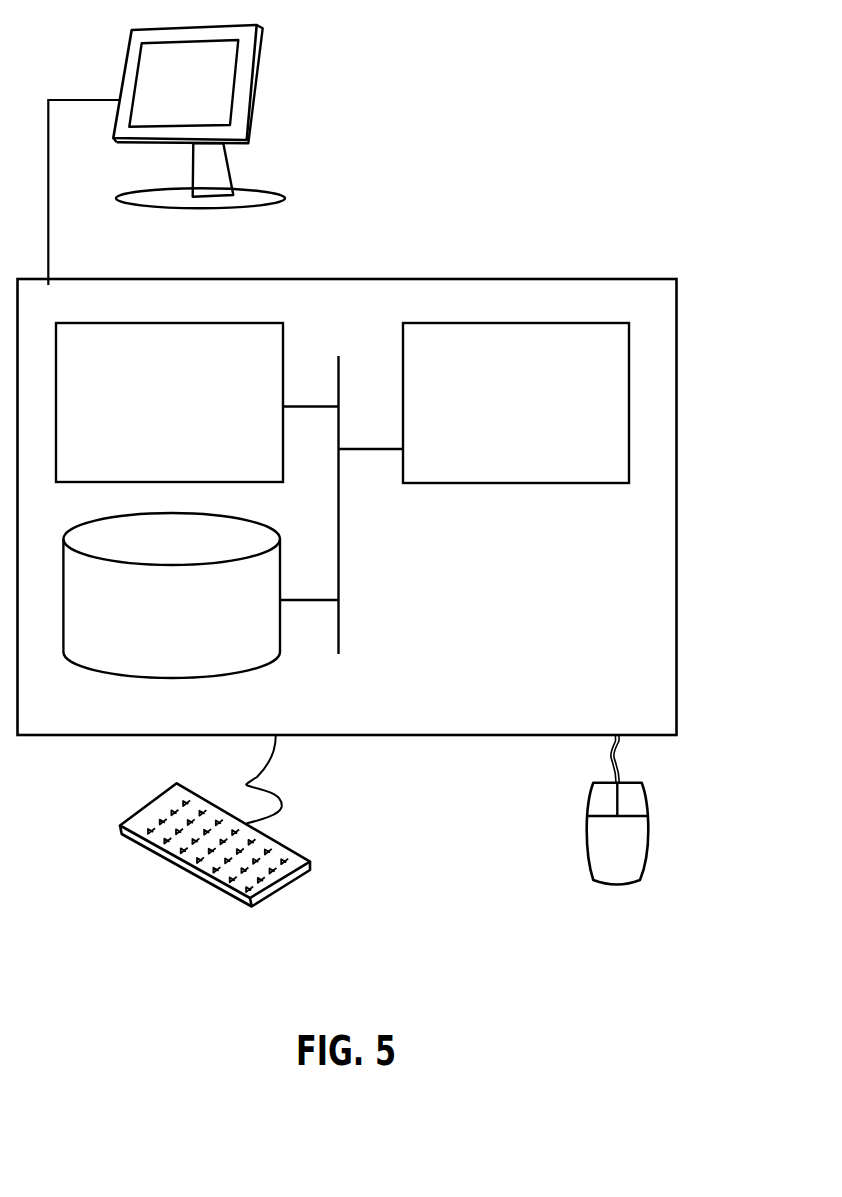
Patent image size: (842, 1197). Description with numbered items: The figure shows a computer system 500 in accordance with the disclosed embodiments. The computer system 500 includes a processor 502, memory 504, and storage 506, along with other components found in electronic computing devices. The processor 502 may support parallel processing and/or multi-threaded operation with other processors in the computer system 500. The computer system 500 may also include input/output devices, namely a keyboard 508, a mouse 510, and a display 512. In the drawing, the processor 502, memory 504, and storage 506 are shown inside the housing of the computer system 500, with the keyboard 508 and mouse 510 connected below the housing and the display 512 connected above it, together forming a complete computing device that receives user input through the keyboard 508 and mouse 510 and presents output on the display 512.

The computer system 500 is at (393, 258).
The processor 502 is at (498, 414).
The memory 504 is at (148, 414).
The storage 506 is at (197, 626).
The keyboard 508 is at (140, 848).
The mouse 510 is at (596, 856).
The display 512 is at (166, 155).